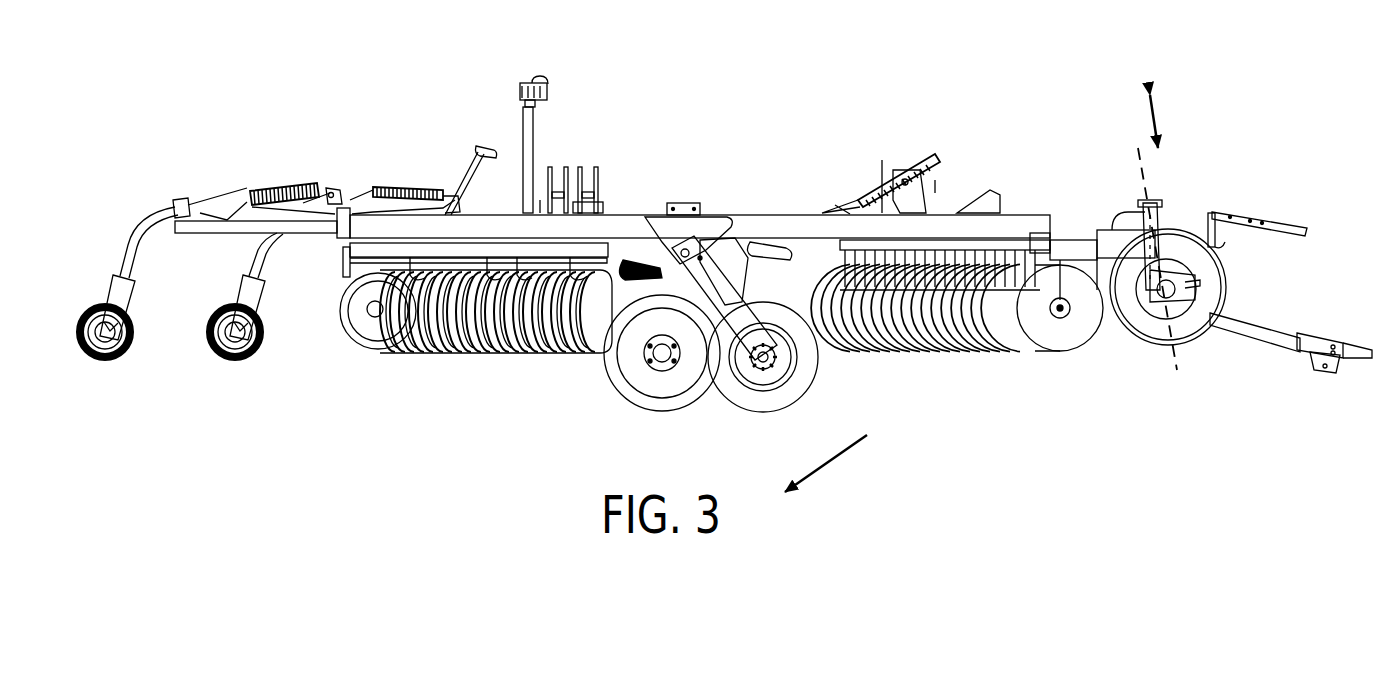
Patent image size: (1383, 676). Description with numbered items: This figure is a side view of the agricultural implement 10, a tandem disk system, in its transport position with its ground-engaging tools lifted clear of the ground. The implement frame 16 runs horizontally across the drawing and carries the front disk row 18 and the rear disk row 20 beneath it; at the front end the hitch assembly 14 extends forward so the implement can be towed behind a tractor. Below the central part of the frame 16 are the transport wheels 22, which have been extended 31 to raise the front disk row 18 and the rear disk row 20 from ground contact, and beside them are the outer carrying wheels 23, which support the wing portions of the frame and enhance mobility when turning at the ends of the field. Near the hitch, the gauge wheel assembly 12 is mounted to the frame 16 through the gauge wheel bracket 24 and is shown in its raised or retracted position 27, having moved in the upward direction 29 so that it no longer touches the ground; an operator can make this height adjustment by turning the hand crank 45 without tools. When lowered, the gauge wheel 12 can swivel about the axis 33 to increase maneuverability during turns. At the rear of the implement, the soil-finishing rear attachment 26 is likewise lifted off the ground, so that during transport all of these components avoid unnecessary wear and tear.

The agricultural implement 10 is at (592, 55).
The gauge wheel assembly 12 is at (1145, 358).
The hitch assembly 14 is at (1255, 333).
The implement frame 16 is at (728, 217).
The front disk row 18 is at (935, 327).
The rear disk row 20 is at (425, 355).
The transport wheels 22 is at (665, 395).
The outer carrying wheels 23 is at (780, 400).
The gauge wheel bracket 24 is at (1105, 240).
The rear attachment 26 is at (92, 205).
The raised or retracted position 27 is at (1252, 292).
The upward direction 29 is at (1158, 118).
The extended 31 is at (837, 455).
The axis 33 is at (1148, 187).
The hand crank 45 is at (1135, 205).